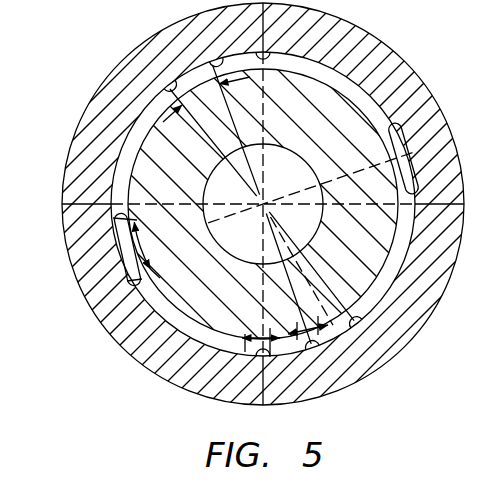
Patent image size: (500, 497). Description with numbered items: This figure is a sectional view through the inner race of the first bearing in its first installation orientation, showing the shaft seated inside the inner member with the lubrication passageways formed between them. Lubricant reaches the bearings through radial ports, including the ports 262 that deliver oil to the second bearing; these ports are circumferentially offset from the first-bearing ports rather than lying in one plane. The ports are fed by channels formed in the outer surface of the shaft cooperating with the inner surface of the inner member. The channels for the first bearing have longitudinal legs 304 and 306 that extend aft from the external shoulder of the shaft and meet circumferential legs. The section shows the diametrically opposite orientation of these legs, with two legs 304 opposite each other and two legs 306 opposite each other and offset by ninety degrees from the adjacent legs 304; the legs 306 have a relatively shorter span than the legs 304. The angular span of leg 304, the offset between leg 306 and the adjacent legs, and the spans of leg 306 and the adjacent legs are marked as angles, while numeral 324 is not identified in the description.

The housing 324 is at (232, 202).
The ports 262 is at (250, 248).
The longitudinal leg 304 is at (399, 135).
The longitudinal leg 306 is at (206, 59).